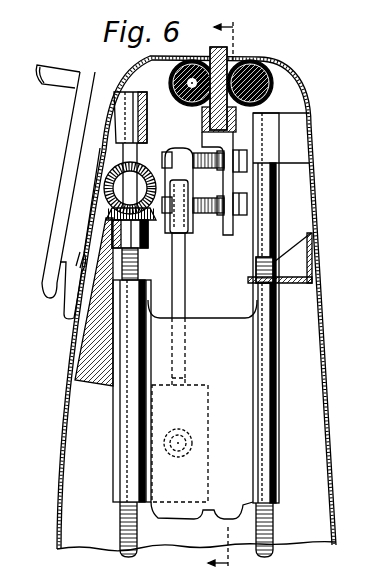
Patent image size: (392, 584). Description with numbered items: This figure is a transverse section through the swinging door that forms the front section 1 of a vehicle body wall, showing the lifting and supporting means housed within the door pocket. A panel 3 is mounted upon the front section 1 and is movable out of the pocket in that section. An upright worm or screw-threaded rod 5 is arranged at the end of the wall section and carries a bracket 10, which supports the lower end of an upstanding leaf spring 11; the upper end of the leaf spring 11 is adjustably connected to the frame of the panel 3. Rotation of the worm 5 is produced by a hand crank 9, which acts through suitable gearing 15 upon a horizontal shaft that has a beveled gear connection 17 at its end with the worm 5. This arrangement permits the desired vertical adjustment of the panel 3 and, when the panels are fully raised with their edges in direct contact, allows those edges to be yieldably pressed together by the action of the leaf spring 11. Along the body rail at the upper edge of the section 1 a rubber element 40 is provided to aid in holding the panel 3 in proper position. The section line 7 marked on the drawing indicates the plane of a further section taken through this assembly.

The front section 1 is at (330, 416).
The panel 3 is at (212, 60).
The screw-threaded rod 5 is at (119, 520).
The section line 7 is at (231, 296).
The hand crank 9 is at (60, 176).
The bracket 10 is at (284, 492).
The leaf spring 11 is at (187, 270).
The gearing 15 is at (94, 388).
The beveled gear connection 17 is at (148, 166).
The rubber element 40 is at (245, 62).